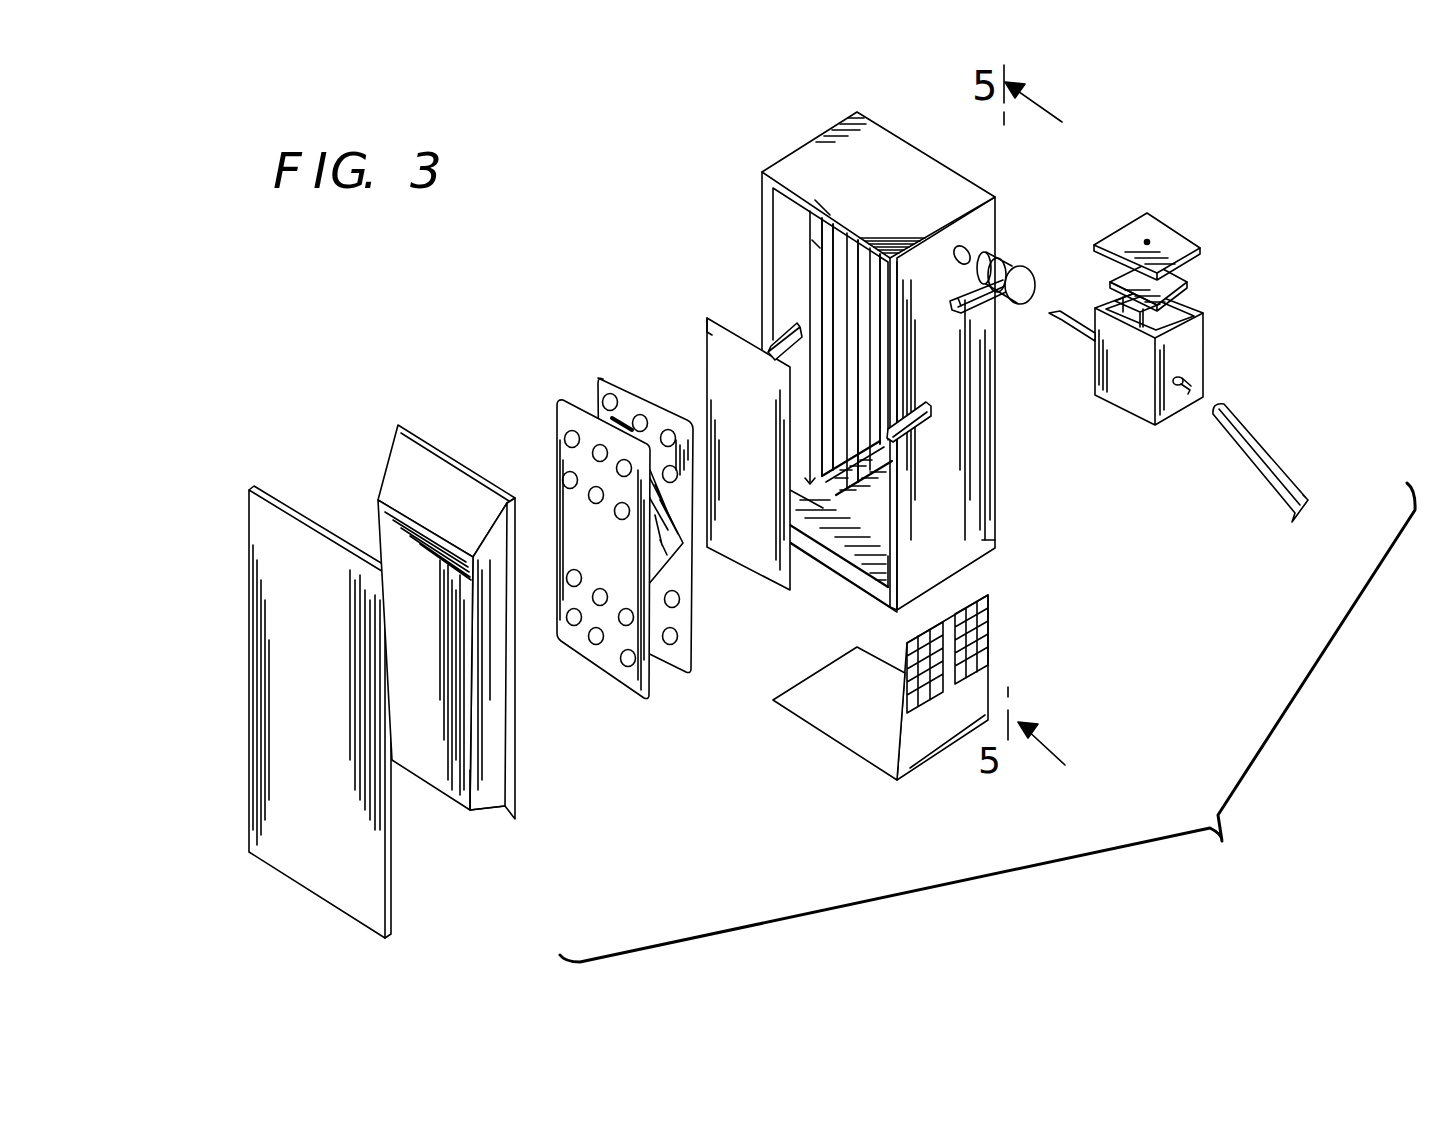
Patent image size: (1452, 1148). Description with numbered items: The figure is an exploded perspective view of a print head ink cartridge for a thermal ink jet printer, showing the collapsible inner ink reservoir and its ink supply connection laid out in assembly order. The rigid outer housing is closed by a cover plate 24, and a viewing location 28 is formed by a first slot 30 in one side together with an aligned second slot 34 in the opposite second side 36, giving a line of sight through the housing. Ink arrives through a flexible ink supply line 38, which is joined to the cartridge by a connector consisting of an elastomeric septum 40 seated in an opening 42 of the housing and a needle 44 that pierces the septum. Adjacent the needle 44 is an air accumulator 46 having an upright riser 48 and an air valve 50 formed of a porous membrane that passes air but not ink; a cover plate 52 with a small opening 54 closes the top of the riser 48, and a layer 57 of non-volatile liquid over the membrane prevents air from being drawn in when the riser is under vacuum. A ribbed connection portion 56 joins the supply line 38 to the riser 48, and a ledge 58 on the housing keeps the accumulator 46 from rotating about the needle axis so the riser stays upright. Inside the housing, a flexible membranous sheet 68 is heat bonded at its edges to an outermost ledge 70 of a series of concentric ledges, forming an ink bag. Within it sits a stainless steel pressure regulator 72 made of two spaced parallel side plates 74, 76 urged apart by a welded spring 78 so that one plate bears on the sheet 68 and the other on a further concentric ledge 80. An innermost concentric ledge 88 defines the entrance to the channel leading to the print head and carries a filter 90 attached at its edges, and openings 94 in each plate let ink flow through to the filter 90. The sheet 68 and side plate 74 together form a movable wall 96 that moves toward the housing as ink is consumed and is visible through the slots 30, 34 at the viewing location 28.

The cover plate 24 is at (250, 511).
The viewing location 28 is at (768, 352).
The first slot 30 is at (923, 418).
The second slot 34 is at (783, 272).
The second side 36 is at (869, 363).
The ink supply line 38 is at (1277, 473).
The septum 40 is at (1012, 262).
The opening 42 is at (963, 244).
The needle 44 is at (1062, 322).
The air accumulator 46 is at (1193, 376).
The riser 48 is at (1205, 337).
The air valve 50 is at (1158, 274).
The cover plate 52 is at (1170, 220).
The opening 54 is at (1147, 240).
The ribbed connection portion 56 is at (1180, 392).
The layer of non-volatile liquid 57 is at (1122, 274).
The ledge 58 is at (958, 298).
The membranous sheet 68 is at (398, 472).
The outermost ledge 70 is at (859, 507).
The pressure regulator 72 is at (640, 516).
The side plate 74 is at (599, 538).
The side plate 76 is at (600, 376).
The spring 78 is at (687, 587).
The concentric ledge 80 is at (890, 502).
The innermost concentric ledge 88 is at (878, 467).
The filter 90 is at (870, 431).
The openings 94 is at (667, 436).
The movable wall 96 is at (448, 740).